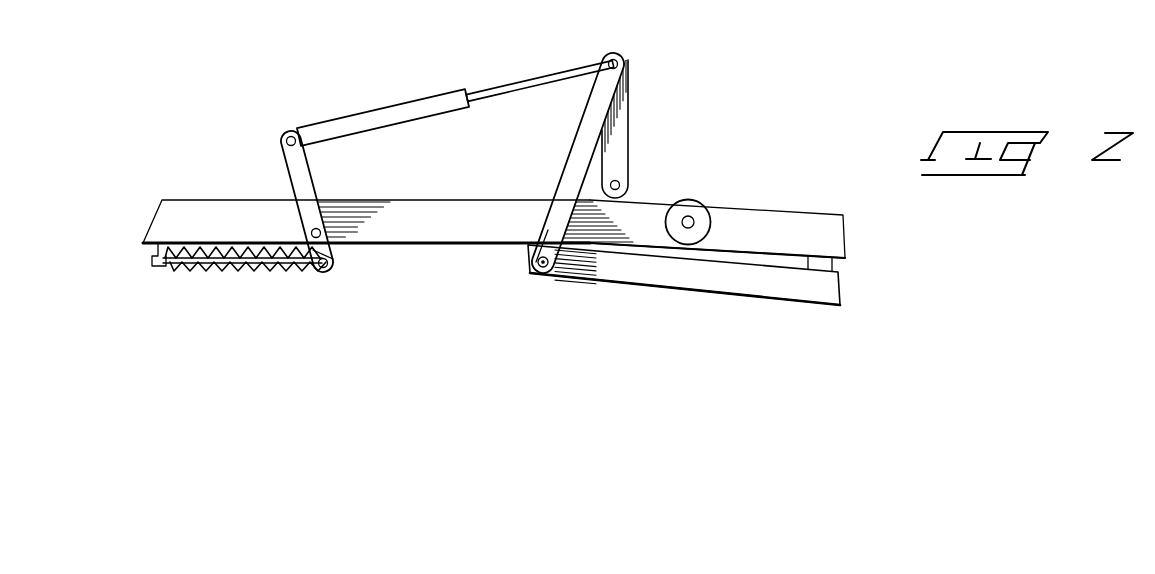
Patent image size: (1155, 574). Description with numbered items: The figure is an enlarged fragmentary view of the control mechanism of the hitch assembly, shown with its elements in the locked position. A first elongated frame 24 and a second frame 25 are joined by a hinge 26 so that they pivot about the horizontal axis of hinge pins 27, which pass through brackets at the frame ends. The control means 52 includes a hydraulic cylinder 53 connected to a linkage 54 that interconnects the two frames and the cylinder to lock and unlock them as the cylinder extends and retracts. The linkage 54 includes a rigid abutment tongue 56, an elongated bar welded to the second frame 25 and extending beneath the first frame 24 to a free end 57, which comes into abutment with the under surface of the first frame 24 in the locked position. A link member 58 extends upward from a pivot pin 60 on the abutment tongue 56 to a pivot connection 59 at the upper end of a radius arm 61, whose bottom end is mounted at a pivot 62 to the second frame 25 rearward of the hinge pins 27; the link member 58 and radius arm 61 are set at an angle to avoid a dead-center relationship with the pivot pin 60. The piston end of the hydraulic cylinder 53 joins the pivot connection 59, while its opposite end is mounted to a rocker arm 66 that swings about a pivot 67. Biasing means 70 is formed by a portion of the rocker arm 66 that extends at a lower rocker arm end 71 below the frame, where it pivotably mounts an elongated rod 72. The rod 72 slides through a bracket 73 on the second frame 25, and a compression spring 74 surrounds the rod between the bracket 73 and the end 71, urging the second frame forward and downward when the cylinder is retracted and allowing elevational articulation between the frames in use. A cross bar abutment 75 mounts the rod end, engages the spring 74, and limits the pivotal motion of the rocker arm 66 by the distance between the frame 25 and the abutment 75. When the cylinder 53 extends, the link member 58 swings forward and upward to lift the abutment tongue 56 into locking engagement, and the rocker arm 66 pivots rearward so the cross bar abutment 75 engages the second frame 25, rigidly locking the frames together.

The first elongated frame 24 is at (804, 197).
The second frame 25 is at (148, 223).
The hinge 26 is at (693, 208).
The hinge pins 27 is at (695, 222).
The control means 52 is at (455, 92).
The hydraulic cylinder 53 is at (372, 118).
The linkage 54 is at (323, 158).
The abutment tongue 56 is at (592, 280).
The free end 57 is at (530, 257).
The link member 58 is at (561, 181).
The pivot connection 59 is at (621, 63).
The pivot pin 60 is at (542, 249).
The radius arm 61 is at (621, 137).
The pivot 62 is at (623, 183).
The rocker arm 66 is at (297, 175).
The pivot 67 is at (310, 233).
The biasing means 70 is at (245, 282).
The lower rocker arm end 71 is at (335, 249).
The elongated rod 72 is at (208, 271).
The bracket 73 is at (150, 245).
The compression spring 74 is at (242, 268).
The cross bar abutment 75 is at (333, 270).